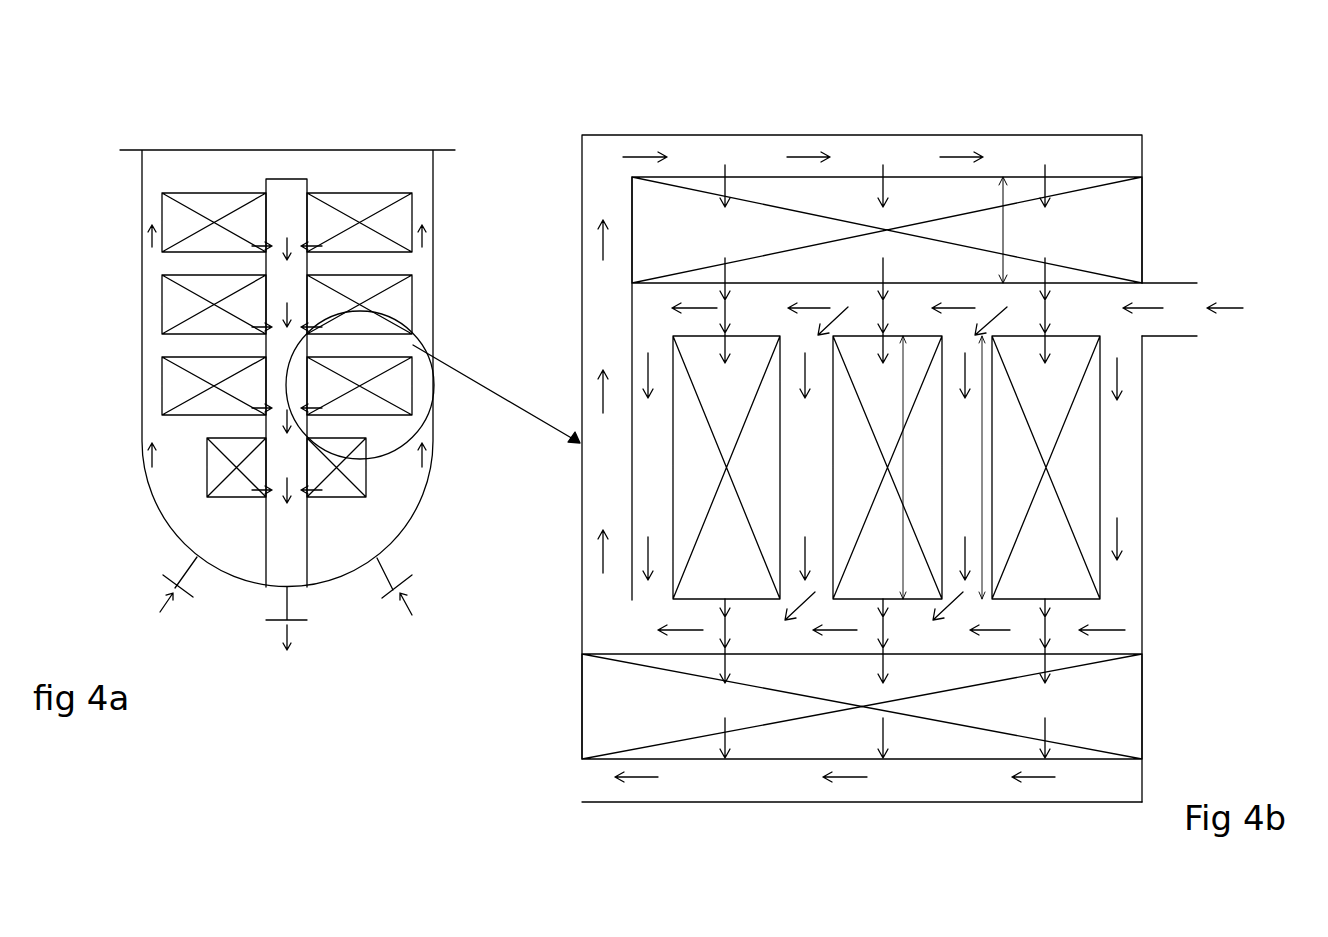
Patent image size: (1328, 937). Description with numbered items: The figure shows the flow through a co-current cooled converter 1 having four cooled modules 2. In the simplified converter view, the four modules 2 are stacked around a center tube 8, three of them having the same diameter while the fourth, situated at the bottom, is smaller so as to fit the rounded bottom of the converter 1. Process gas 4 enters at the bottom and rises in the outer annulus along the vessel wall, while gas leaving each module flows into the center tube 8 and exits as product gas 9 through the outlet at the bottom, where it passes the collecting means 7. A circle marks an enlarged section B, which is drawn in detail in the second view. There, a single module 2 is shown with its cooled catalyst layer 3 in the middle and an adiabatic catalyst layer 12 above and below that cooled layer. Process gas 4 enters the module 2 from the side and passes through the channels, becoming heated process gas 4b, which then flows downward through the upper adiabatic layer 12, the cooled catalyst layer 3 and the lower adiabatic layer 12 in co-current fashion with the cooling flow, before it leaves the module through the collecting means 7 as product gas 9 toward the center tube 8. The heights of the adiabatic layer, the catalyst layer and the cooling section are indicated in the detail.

In FIG. 4A, the converter 1 is at (433, 188).
In FIG. 4A, the module 2 is at (360, 205).
In FIG. 4B, the module 2 is at (1142, 148).
In FIG. 4A, the catalyst layer 3 is at (397, 297).
In FIG. 4B, the catalyst layer 3 is at (687, 485).
In FIG. 4A, the process gas 4 is at (408, 598).
In FIG. 4B, the process gas 4 is at (1233, 298).
In FIG. 4B, the heated process gas 4b is at (1047, 185).
In FIG. 4A, the collecting means 7 is at (290, 644).
In FIG. 4B, the collecting means 7 is at (1103, 787).
In FIG. 4A, the center tube 8 is at (282, 207).
In FIG. 4A, the product gas 9 is at (292, 497).
In FIG. 4B, the product gas 9 is at (650, 778).
In FIG. 4B, the adiabatic catalyst layer 12 is at (1123, 230).
In FIG. 4A, the enlarged section B is at (420, 393).